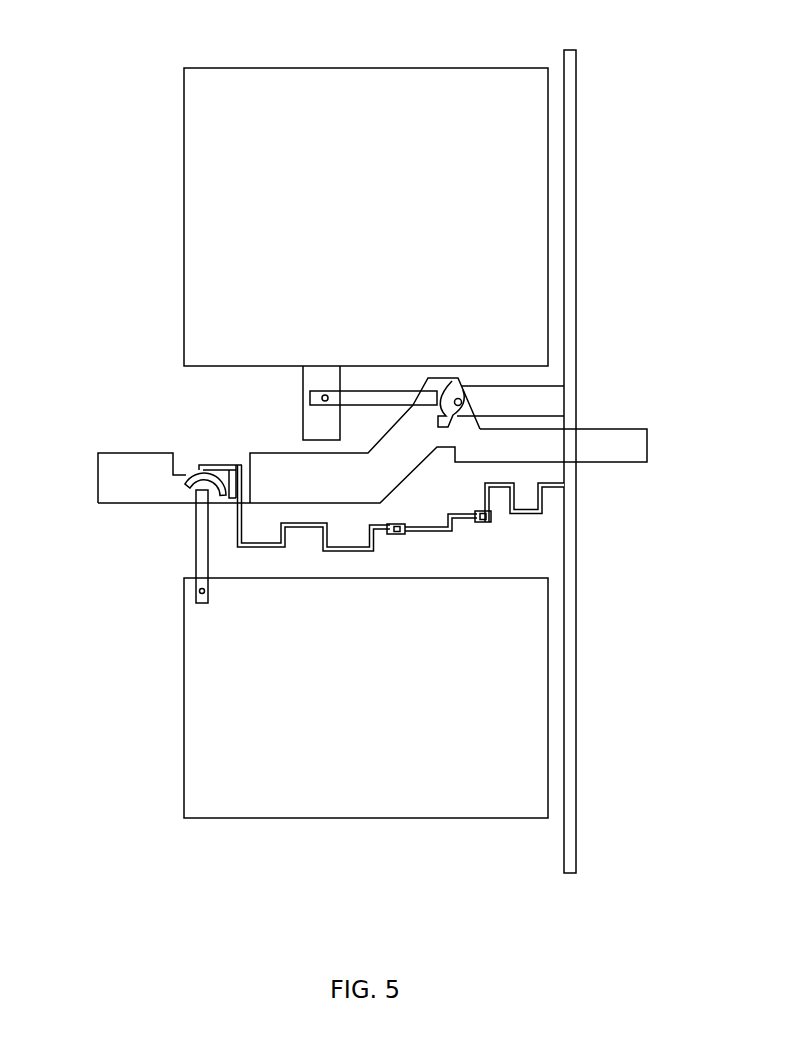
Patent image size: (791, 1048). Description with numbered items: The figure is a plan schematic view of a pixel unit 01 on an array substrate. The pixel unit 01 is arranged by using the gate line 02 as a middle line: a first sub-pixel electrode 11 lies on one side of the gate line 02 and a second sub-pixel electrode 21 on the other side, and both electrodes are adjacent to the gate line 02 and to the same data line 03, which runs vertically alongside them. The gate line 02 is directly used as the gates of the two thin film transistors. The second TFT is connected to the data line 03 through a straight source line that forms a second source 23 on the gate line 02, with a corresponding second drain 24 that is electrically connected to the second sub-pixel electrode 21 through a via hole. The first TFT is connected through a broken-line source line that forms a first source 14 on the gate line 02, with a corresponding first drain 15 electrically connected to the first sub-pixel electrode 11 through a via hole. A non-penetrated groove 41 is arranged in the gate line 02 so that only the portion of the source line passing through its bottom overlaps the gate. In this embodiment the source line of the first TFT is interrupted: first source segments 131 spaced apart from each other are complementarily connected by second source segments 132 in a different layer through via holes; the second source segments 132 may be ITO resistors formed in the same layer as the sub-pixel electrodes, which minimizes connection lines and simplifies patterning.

The pixel unit 01 is at (92, 53).
The gate line 02 is at (98, 465).
The data line 03 is at (576, 50).
The first sub-pixel electrode 11 is at (298, 818).
The first source 14 is at (182, 487).
The first drain 15 is at (200, 497).
The second sub-pixel electrode 21 is at (298, 67).
The second source 23 is at (460, 388).
The second drain 24 is at (432, 380).
The groove 41 is at (232, 492).
The first source segments 131 is at (275, 548).
The second source segments 132 is at (440, 532).